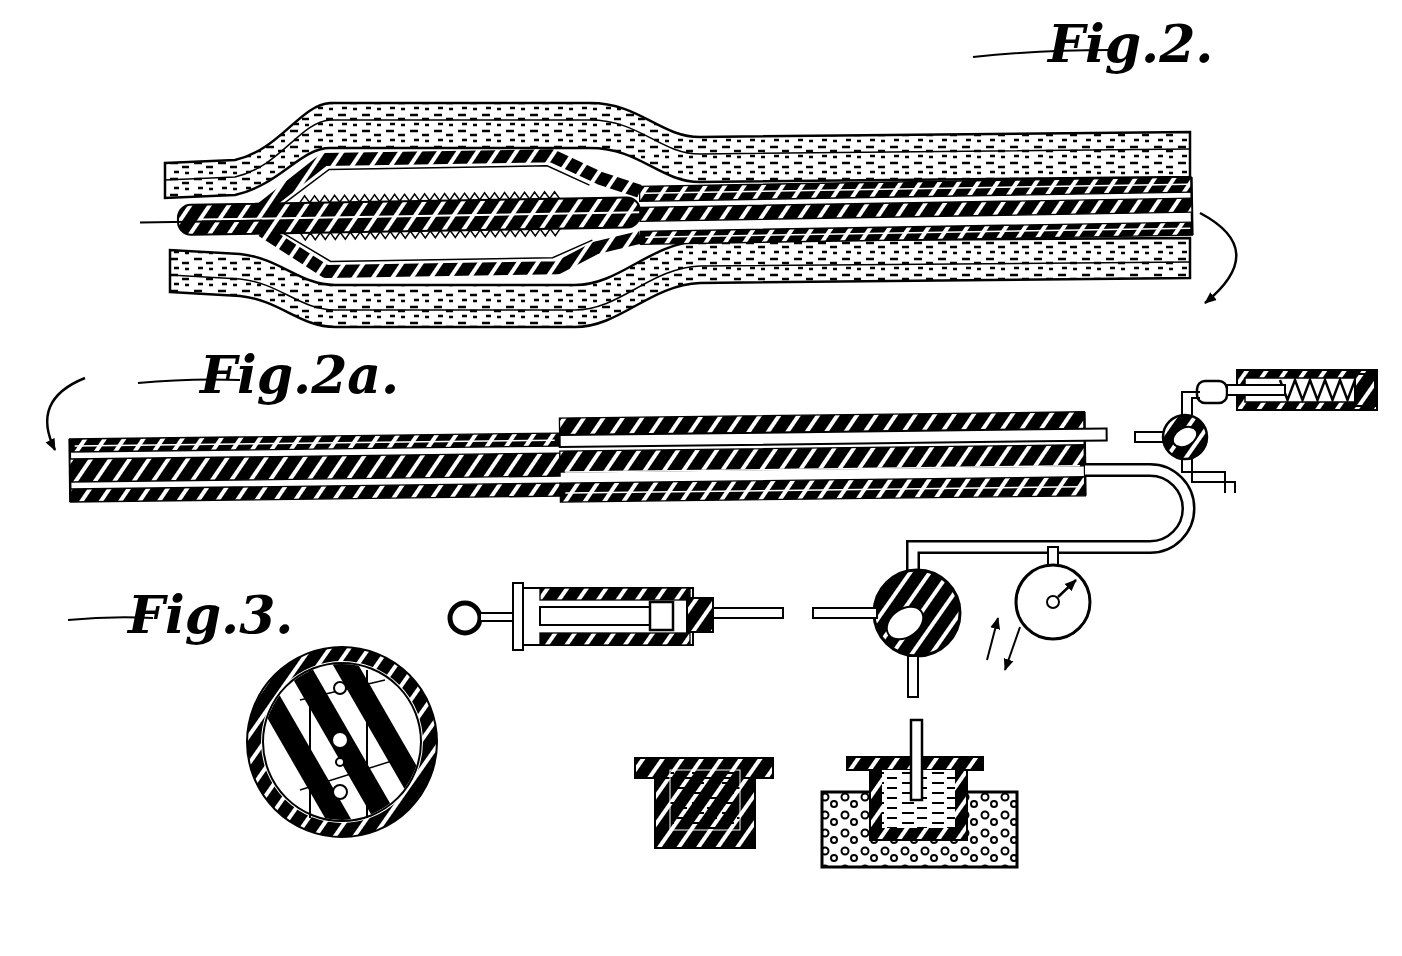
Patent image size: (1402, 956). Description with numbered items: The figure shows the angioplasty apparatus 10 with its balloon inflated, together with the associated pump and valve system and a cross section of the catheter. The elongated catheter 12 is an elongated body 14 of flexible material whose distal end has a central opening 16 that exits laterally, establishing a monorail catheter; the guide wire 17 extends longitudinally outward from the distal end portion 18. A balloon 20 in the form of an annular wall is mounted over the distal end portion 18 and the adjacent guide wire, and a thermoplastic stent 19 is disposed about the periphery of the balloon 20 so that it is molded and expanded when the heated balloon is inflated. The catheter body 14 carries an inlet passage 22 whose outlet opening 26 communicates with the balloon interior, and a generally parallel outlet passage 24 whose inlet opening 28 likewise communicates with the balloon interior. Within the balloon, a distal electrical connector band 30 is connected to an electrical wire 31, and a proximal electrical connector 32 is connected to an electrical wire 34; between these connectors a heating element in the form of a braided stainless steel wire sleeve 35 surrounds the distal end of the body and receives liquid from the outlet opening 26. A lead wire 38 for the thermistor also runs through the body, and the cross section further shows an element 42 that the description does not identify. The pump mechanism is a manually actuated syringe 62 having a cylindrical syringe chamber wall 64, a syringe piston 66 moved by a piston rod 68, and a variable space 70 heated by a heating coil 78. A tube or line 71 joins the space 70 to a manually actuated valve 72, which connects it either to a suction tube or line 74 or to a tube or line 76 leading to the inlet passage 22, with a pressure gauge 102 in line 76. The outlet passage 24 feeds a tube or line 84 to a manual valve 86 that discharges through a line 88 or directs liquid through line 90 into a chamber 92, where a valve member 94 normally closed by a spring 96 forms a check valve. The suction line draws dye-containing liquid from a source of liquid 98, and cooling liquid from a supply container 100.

In FIG. 2, the angioplasty apparatus 10 is at (683, 122).
In FIG. 2A, the angioplasty apparatus 10 is at (787, 404).
In FIG. 3, the angioplasty apparatus 10 is at (265, 815).
In FIG. 2, the elongated catheter 12 is at (1197, 177).
In FIG. 2A, the elongated catheter 12 is at (454, 429).
In FIG. 3, the elongated catheter 12 is at (452, 745).
In FIG. 2, the catheter body 14 is at (1195, 197).
In FIG. 2A, the catheter body 14 is at (137, 500).
In FIG. 3, the catheter body 14 is at (270, 677).
In FIG. 2, the central opening 16 is at (868, 240).
In FIG. 2A, the central opening 16 is at (393, 432).
In FIG. 3, the central opening 16 is at (413, 772).
In FIG. 2, the guide wire 17 is at (194, 251).
In FIG. 3, the guide wire 17 is at (331, 742).
In FIG. 2, the distal end portion 18 is at (450, 181).
In FIG. 2, the thermoplastic stent 19 is at (378, 162).
In FIG. 2, the balloon 20 is at (425, 165).
In FIG. 3, the balloon 20 is at (410, 677).
In FIG. 2, the inlet passage 22 is at (1022, 232).
In FIG. 2A, the inlet passage 22 is at (797, 473).
In FIG. 3, the inlet passage 22 is at (293, 717).
In FIG. 2, the outlet passage 24 is at (1007, 193).
In FIG. 2A, the outlet passage 24 is at (853, 417).
In FIG. 3, the outlet passage 24 is at (420, 700).
In FIG. 2, the outlet opening 26 is at (537, 237).
In FIG. 2, the inlet opening 28 is at (553, 196).
In FIG. 2, the distal electrical connector band 30 is at (433, 211).
In FIG. 3, the electrical wire 31 is at (400, 790).
In FIG. 2, the proximal electrical connector 32 is at (587, 300).
In FIG. 3, the electrical wire 34 is at (340, 681).
In FIG. 2, the braided stainless steel wire sleeve 35 is at (430, 215).
In FIG. 3, the lead wire 38 is at (380, 827).
In FIG. 2A, the sleeve 42 is at (713, 420).
In FIG. 2A, the syringe 62 is at (607, 578).
In FIG. 2A, the cylindrical syringe chamber wall 64 is at (593, 645).
In FIG. 2A, the syringe piston 66 is at (687, 588).
In FIG. 2A, the piston rod 68 is at (467, 602).
In FIG. 2A, the variable space 70 is at (677, 643).
In FIG. 2A, the tube or line 71 is at (773, 623).
In FIG. 2A, the manually actuated valve 72 is at (890, 585).
In FIG. 2A, the suction tube or line 74 is at (923, 680).
In FIG. 2A, the tube or line 76 is at (1153, 548).
In FIG. 2A, the heating coil 78 is at (572, 590).
In FIG. 2A, the tube or line 84 is at (1137, 428).
In FIG. 2A, the manual valve 86 is at (1213, 447).
In FIG. 2A, the line 88 is at (1236, 488).
In FIG. 2A, the line 90 is at (1187, 390).
In FIG. 2A, the chamber 92 is at (1310, 372).
In FIG. 2A, the valve member 94 is at (1267, 413).
In FIG. 2A, the spring 96 is at (1343, 413).
In FIG. 2A, the source of liquid 98 is at (653, 813).
In FIG. 2A, the supply container 100 is at (970, 780).
In FIG. 2A, the pressure gauge 102 is at (1090, 612).